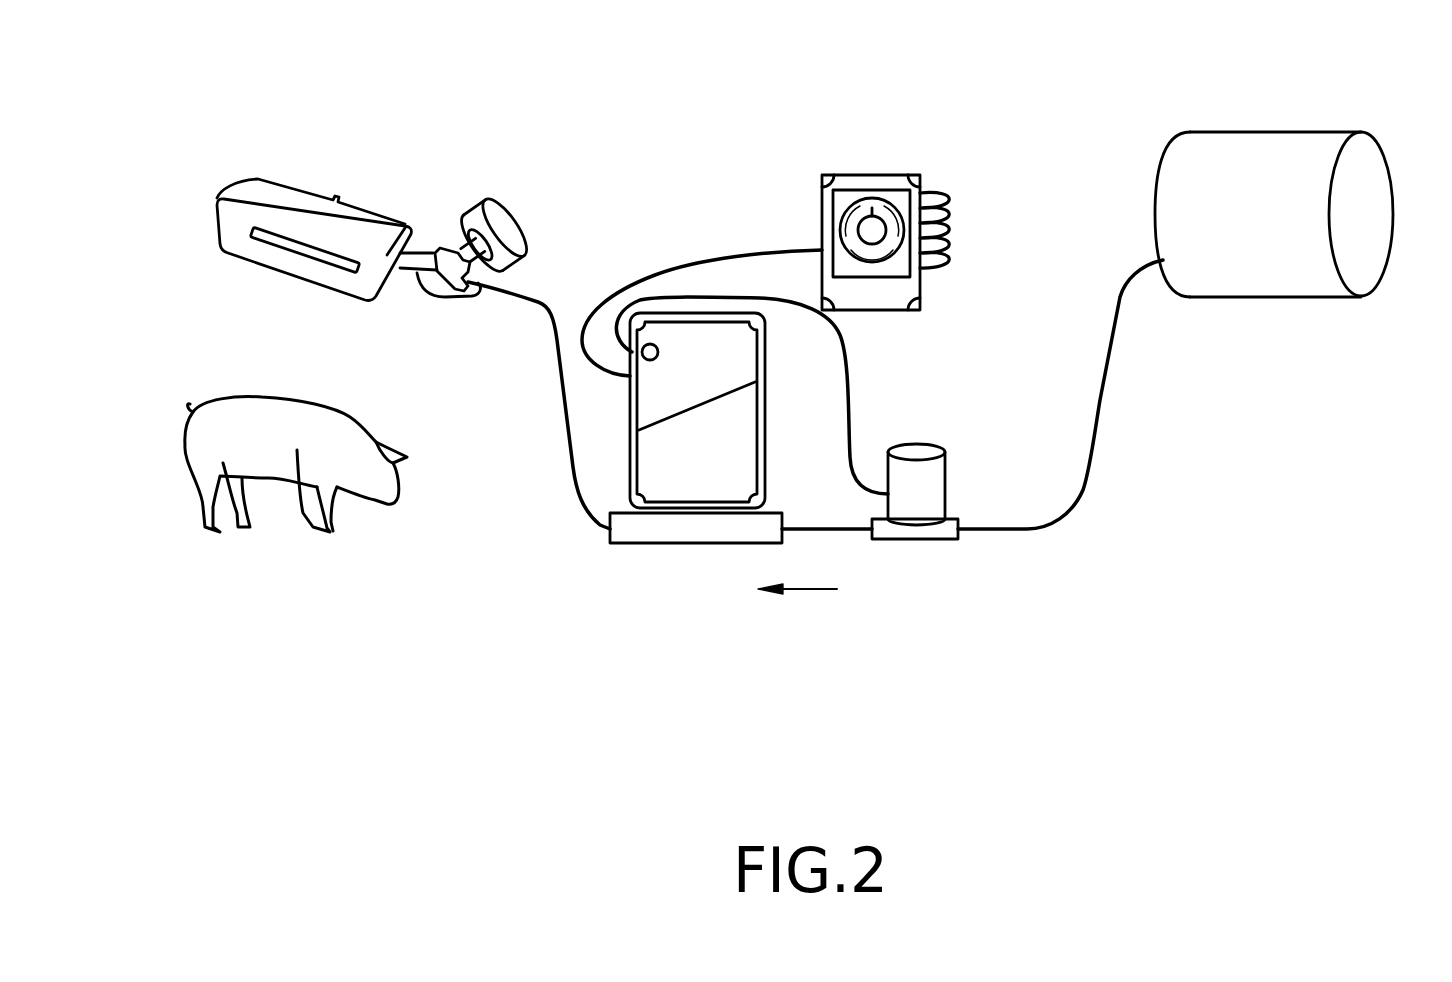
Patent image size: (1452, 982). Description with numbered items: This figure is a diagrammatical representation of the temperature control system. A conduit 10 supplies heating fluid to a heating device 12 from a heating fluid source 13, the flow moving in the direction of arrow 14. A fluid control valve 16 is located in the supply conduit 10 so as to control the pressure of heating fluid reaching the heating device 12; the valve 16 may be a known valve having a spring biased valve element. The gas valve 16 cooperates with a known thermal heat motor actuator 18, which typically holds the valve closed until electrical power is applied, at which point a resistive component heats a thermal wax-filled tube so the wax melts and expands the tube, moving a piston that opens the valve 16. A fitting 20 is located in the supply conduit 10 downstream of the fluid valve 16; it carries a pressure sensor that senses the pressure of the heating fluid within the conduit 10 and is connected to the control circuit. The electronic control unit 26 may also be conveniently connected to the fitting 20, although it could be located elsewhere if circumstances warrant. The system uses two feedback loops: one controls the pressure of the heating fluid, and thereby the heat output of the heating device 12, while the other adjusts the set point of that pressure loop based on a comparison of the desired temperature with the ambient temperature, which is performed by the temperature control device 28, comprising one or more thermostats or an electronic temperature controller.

The conduit 10 is at (1092, 466).
The heating device 12 is at (272, 223).
The heating fluid source 13 is at (1308, 143).
The arrow 14 is at (813, 592).
The fluid control valve 16 is at (943, 540).
The thermal heat motor actuator 18 is at (935, 475).
The fitting 20 is at (642, 544).
The electronic control unit 26 is at (742, 365).
The temperature control device 28 is at (883, 185).